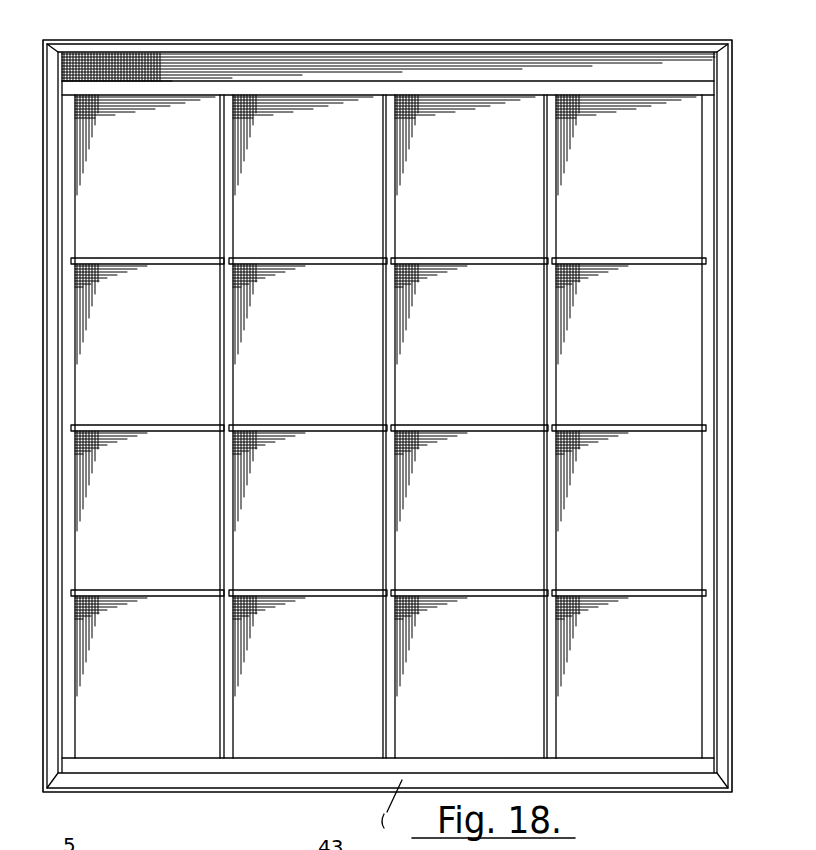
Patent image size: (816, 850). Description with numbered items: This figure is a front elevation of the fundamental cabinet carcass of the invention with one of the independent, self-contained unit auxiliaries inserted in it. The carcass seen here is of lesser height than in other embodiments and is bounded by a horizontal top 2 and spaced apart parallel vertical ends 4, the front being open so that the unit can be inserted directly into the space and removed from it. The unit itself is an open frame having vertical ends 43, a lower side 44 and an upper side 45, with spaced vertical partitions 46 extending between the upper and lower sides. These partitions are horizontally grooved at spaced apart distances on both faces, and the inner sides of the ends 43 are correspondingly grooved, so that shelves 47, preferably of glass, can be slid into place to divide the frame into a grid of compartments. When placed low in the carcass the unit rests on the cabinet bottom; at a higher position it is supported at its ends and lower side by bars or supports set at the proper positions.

The horizontal top 2 is at (592, 48).
The vertical end 4 is at (53, 368).
The vertical end of unit frame 43 is at (68, 360).
The lower side 44 is at (433, 763).
The upper side 45 is at (487, 88).
The vertical partition 46 is at (387, 202).
The shelf 47 is at (163, 259).